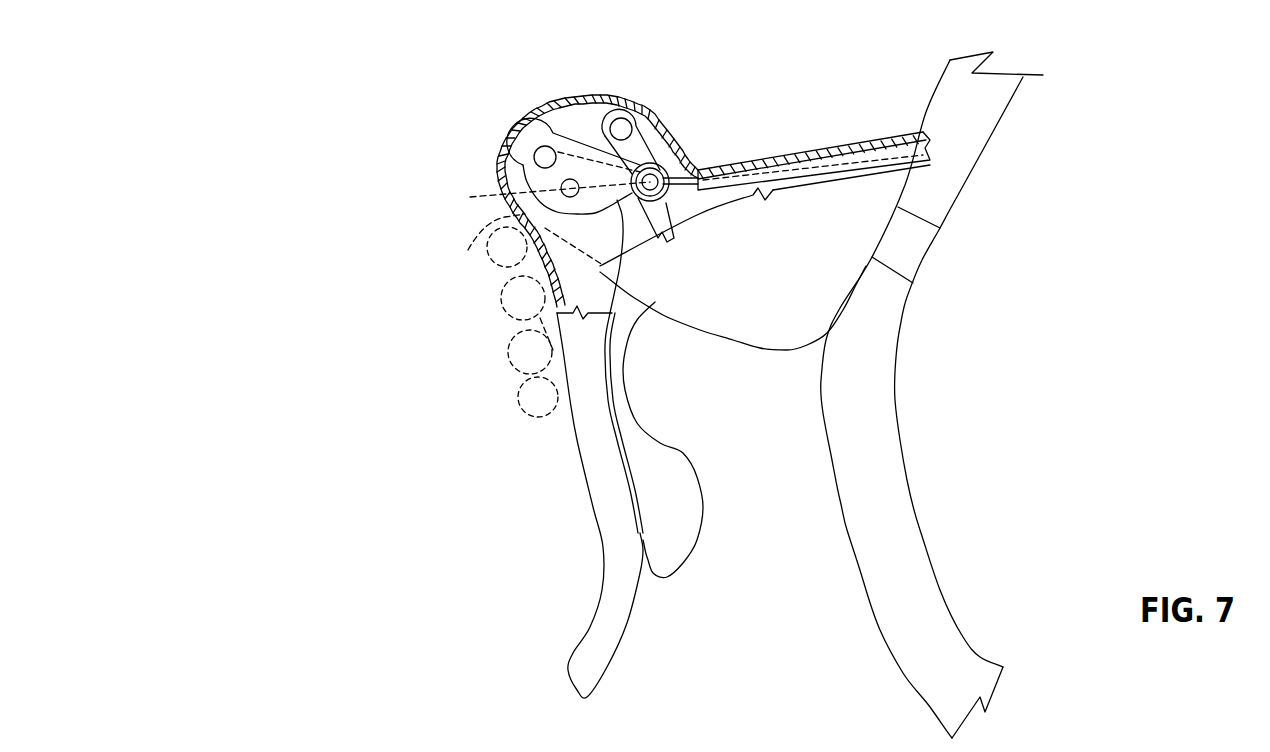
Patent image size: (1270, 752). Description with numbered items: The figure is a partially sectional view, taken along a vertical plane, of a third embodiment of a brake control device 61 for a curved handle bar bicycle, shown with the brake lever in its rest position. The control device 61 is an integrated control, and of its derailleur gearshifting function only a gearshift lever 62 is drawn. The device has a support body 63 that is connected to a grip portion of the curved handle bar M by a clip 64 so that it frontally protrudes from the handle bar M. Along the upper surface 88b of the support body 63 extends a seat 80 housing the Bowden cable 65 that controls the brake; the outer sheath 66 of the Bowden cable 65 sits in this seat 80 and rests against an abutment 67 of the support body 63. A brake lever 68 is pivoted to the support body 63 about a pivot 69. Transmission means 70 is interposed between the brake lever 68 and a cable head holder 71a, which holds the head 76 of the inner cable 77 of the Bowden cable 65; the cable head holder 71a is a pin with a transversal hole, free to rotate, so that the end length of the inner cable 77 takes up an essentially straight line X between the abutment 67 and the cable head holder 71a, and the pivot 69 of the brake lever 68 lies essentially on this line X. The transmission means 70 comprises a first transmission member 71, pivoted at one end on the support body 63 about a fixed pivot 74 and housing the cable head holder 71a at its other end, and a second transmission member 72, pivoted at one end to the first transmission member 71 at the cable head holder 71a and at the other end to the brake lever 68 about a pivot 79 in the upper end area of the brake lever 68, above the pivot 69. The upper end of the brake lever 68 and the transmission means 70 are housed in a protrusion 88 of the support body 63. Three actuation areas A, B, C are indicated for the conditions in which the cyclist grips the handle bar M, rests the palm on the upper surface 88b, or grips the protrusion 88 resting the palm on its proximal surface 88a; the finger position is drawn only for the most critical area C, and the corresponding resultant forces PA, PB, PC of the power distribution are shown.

The brake control device 61 is at (333, 117).
The gearshift lever 62 is at (672, 457).
The support body 63 is at (773, 330).
The clip 64 is at (912, 260).
The Bowden cable 65 is at (884, 175).
The outer sheath 66 is at (885, 137).
The abutment 67 is at (718, 165).
The brake lever 68 is at (620, 630).
The pivot 69 is at (500, 222).
The transmission means 70 is at (594, 90).
The first transmission member 71 is at (643, 152).
The cable head holder 71a is at (666, 245).
The second transmission member 72 is at (580, 152).
The fixed pivot 74 is at (620, 118).
The head 76 is at (655, 198).
The inner cable 77 is at (683, 190).
The pivot 79 is at (543, 163).
The seat 80 is at (848, 158).
The protrusion 88 is at (498, 128).
The proximal surface 88a is at (650, 100).
The upper surface 88b is at (780, 143).
The line X is at (483, 195).
The handle bar M is at (920, 598).
The resultant force PA is at (603, 545).
The resultant force PB is at (602, 352).
The resultant force PC is at (557, 313).
The actuation area A is at (527, 686).
The actuation area B is at (355, 287).
The actuation area C is at (422, 173).